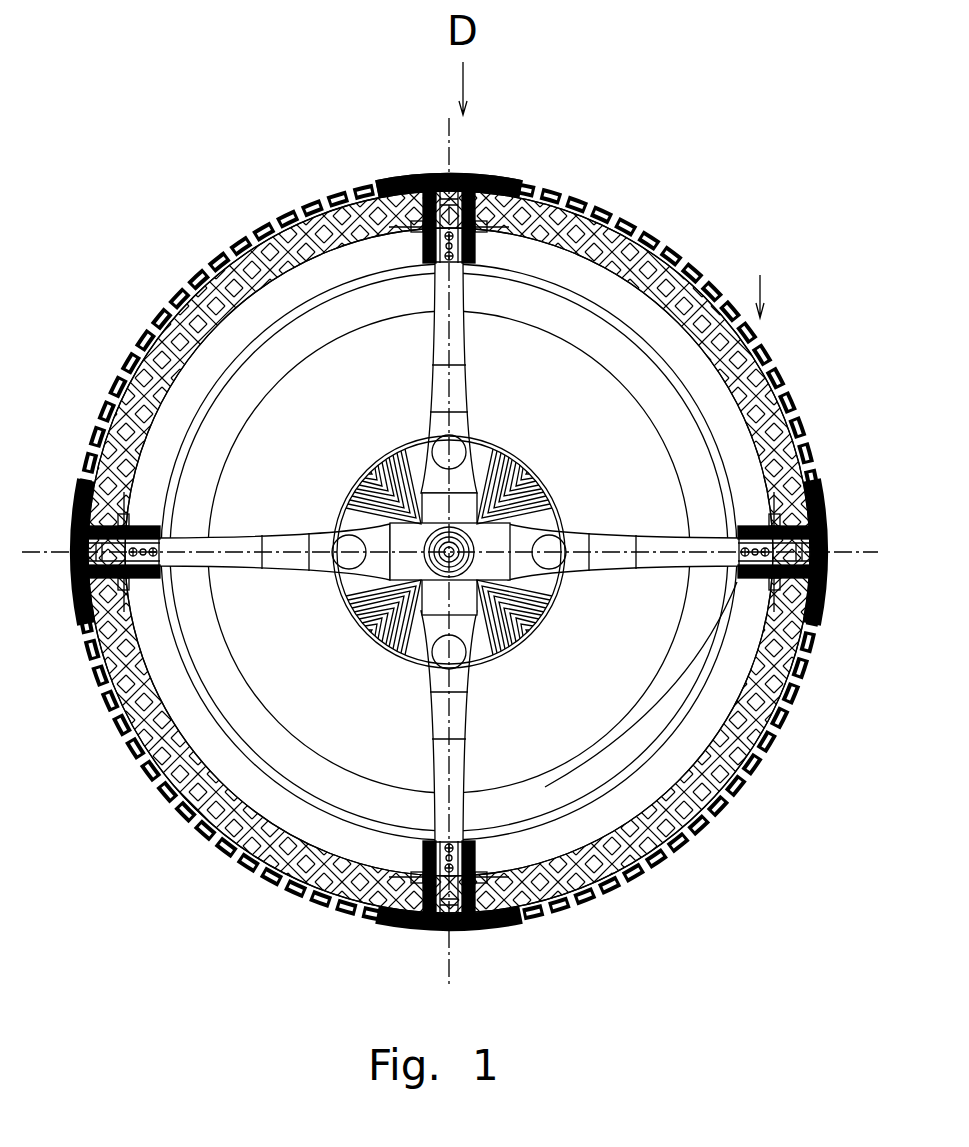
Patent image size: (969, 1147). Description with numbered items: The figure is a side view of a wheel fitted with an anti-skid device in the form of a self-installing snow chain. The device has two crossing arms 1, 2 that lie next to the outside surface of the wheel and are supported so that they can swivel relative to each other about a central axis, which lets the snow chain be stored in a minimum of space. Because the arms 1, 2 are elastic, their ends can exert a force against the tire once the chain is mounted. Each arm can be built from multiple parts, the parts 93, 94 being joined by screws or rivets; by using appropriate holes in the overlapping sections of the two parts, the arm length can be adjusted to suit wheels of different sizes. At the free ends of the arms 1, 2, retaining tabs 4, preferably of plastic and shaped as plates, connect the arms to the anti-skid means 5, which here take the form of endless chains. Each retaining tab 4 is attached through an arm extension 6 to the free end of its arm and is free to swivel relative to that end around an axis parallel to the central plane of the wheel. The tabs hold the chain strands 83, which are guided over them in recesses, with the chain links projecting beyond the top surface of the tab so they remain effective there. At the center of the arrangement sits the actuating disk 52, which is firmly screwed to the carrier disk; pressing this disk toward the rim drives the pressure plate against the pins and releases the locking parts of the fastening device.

The crossing arm 1 is at (457, 350).
The crossing arm 2 is at (653, 580).
The retaining tab 4 is at (482, 176).
The anti-skid means 5 is at (759, 278).
The arm extension 6 is at (548, 205).
The actuating disk 52 is at (377, 457).
The strand 83 is at (817, 425).
The arm part 93 is at (440, 337).
The arm part 94 is at (390, 176).